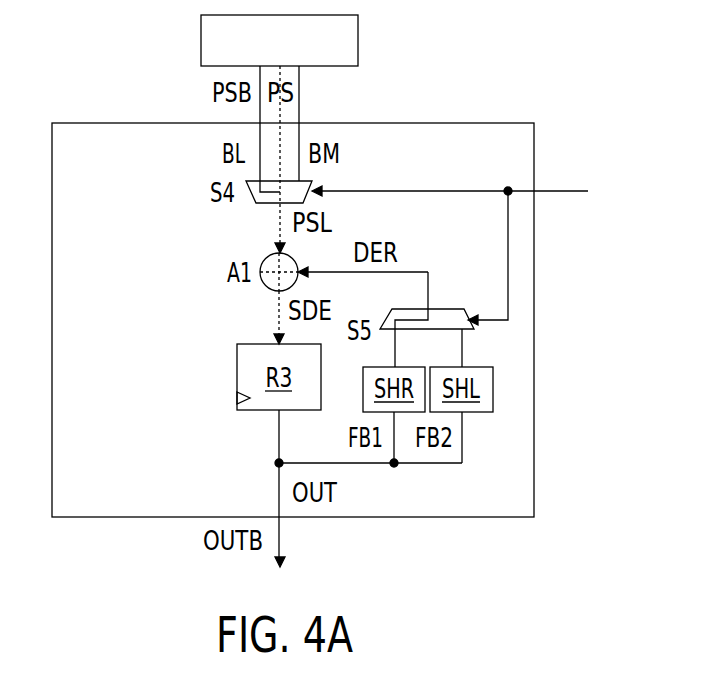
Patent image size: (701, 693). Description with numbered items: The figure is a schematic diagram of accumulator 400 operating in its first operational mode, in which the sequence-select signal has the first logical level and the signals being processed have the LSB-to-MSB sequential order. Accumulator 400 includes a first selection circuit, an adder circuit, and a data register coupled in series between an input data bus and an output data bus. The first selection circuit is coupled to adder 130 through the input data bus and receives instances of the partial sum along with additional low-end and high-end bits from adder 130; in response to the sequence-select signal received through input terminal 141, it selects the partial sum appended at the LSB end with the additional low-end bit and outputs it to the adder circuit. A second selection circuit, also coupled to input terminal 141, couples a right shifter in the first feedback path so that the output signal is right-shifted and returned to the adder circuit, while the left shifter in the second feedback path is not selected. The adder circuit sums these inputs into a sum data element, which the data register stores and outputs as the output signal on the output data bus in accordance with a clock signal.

The adder 130 is at (262, 52).
The accumulator 400 is at (108, 170).
The input terminal 141 is at (450, 238).